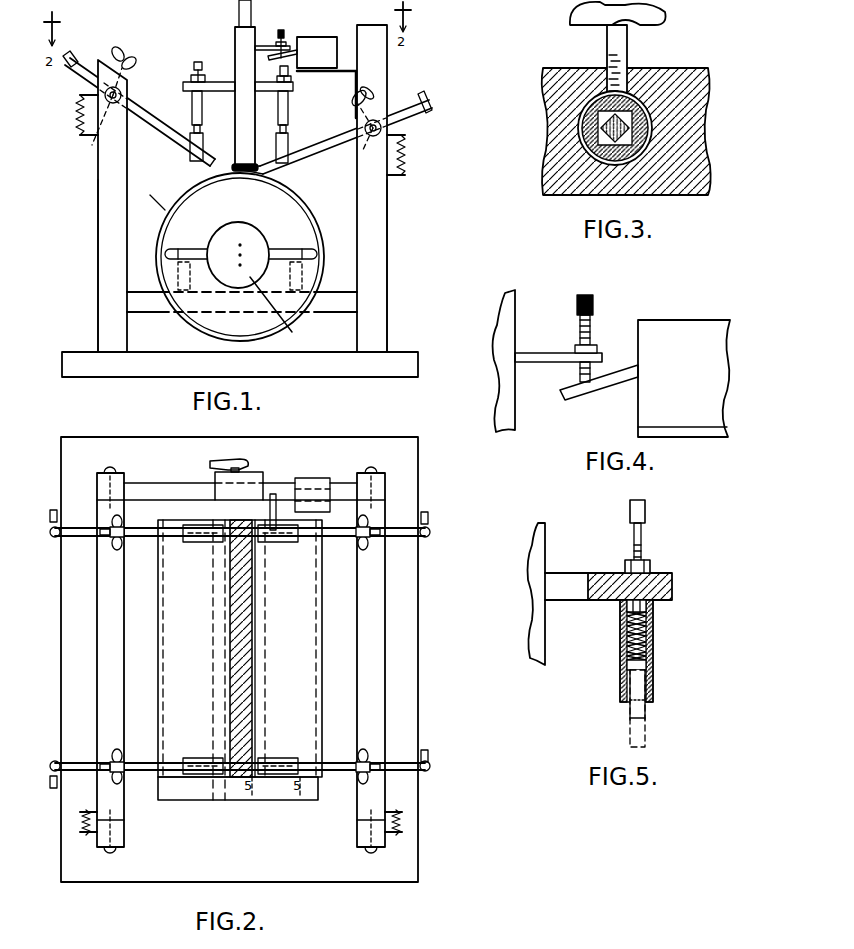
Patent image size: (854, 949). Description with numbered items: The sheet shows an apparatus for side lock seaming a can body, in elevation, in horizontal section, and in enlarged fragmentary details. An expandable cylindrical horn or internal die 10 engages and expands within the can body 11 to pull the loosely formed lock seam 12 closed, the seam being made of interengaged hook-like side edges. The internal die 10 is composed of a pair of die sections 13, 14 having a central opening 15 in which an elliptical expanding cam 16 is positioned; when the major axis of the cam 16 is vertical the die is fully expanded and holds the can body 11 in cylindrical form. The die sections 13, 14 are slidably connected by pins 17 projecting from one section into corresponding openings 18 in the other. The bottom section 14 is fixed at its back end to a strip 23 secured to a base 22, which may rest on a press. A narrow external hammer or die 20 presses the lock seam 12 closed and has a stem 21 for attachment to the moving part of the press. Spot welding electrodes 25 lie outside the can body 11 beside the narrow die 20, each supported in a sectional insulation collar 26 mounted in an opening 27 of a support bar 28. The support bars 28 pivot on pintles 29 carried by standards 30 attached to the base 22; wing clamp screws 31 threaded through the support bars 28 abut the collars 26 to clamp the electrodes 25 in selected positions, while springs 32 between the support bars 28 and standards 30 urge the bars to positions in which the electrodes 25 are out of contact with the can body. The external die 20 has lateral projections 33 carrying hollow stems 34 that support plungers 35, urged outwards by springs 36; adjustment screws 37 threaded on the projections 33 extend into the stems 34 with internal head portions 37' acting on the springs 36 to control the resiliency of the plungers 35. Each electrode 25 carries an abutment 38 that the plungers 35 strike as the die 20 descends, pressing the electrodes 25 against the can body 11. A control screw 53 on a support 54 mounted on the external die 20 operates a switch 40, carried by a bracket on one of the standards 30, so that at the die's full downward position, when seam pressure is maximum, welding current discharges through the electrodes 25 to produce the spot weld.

In FIG. 1, the internal die 10 is at (292, 214).
In FIG. 2, the internal die 10 is at (302, 803).
In FIG. 1, the can body 11 is at (320, 228).
In FIG. 2, the can body 11 is at (322, 775).
In FIG. 1, the lock seam 12 is at (256, 164).
In FIG. 2, the lock seam 12 is at (262, 650).
In FIG. 1, the die section 13 is at (186, 210).
In FIG. 2, the die section 13 is at (283, 798).
In FIG. 1, the bottom die section 14 is at (172, 270).
In FIG. 2, the bottom die section 14 is at (258, 800).
In FIG. 1, the central opening 15 is at (270, 242).
In FIG. 1, the expanding cam 16 is at (283, 310).
In FIG. 2, the expanding cam 16 is at (244, 458).
In FIG. 1, the pins 17 is at (172, 250).
In FIG. 1, the openings 18 is at (316, 288).
In FIG. 1, the external die 20 is at (236, 54).
In FIG. 2, the external die 20 is at (230, 680).
In FIG. 4, the external die 20 is at (510, 327).
In FIG. 5, the external die 20 is at (535, 656).
In FIG. 1, the stem 21 is at (250, 18).
In FIG. 1, the base 22 is at (375, 364).
In FIG. 2, the base 22 is at (327, 880).
In FIG. 1, the strip 23 is at (192, 332).
In FIG. 2, the strip 23 is at (163, 490).
In FIG. 1, the spot welding electrodes 25 is at (144, 124).
In FIG. 2, the spot welding electrodes 25 is at (60, 537).
In FIG. 3, the spot welding electrodes 25 is at (620, 162).
In FIG. 3, the sectional insulation collar 26 is at (658, 76).
In FIG. 3, the openings 27 is at (652, 112).
In FIG. 1, the support bars 28 is at (97, 148).
In FIG. 2, the support bars 28 is at (100, 605).
In FIG. 3, the support bars 28 is at (698, 165).
In FIG. 1, the pintles 29 is at (122, 96).
In FIG. 2, the pintles 29 is at (110, 468).
In FIG. 1, the standards 30 is at (98, 197).
In FIG. 2, the standards 30 is at (98, 486).
In FIG. 1, the wing clamp screws 31 is at (129, 56).
In FIG. 2, the wing clamp screws 31 is at (117, 550).
In FIG. 3, the wing clamp screws 31 is at (608, 41).
In FIG. 1, the springs 32 is at (78, 119).
In FIG. 2, the springs 32 is at (80, 824).
In FIG. 1, the lateral projections 33 is at (258, 88).
In FIG. 2, the lateral projections 33 is at (212, 545).
In FIG. 5, the lateral projections 33 is at (674, 586).
In FIG. 1, the hollow stems 34 is at (197, 110).
In FIG. 5, the hollow stems 34 is at (650, 636).
In FIG. 1, the plungers 35 is at (200, 128).
In FIG. 5, the plungers 35 is at (640, 712).
In FIG. 5, the springs 36 is at (622, 648).
In FIG. 1, the adjustment screws 37 is at (240, 78).
In FIG. 2, the adjustment screws 37 is at (256, 631).
In FIG. 5, the adjustment screws 37 is at (648, 536).
In FIG. 5, the internal head portion 37' is at (658, 611).
In FIG. 1, the abutment 38 is at (192, 150).
In FIG. 1, the switch 40 is at (312, 37).
In FIG. 4, the switch 40 is at (692, 326).
In FIG. 1, the control screw 53 is at (283, 30).
In FIG. 4, the control screw 53 is at (593, 335).
In FIG. 1, the support 54 is at (276, 53).
In FIG. 4, the support 54 is at (528, 353).